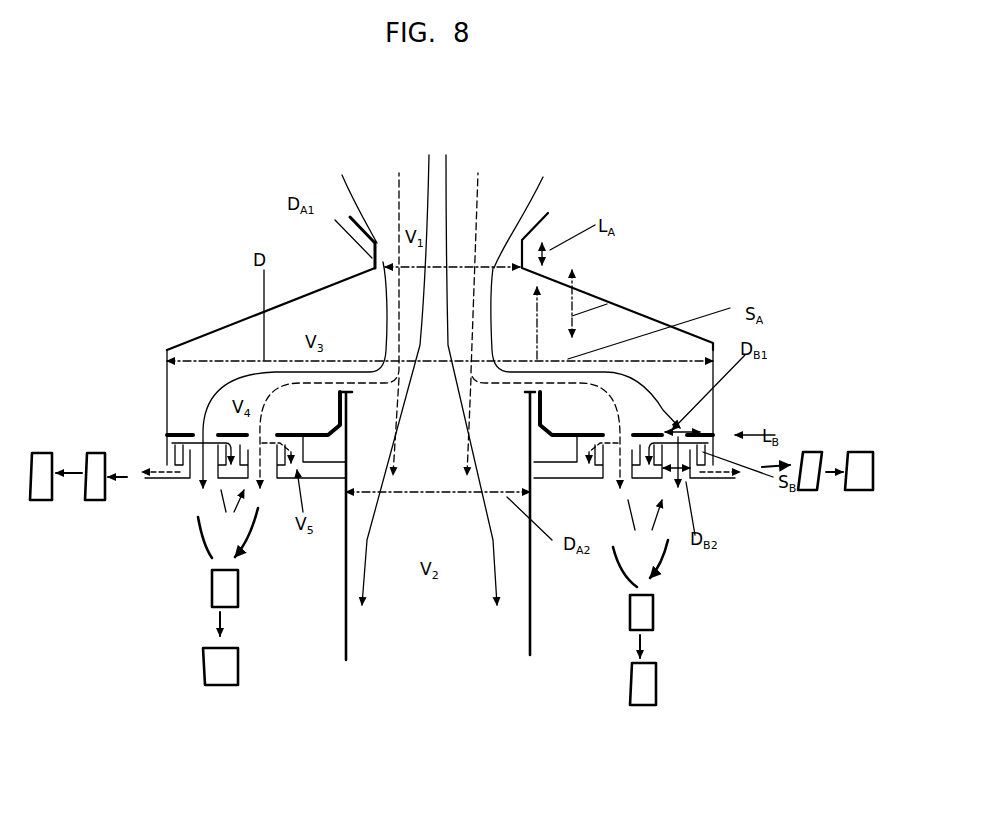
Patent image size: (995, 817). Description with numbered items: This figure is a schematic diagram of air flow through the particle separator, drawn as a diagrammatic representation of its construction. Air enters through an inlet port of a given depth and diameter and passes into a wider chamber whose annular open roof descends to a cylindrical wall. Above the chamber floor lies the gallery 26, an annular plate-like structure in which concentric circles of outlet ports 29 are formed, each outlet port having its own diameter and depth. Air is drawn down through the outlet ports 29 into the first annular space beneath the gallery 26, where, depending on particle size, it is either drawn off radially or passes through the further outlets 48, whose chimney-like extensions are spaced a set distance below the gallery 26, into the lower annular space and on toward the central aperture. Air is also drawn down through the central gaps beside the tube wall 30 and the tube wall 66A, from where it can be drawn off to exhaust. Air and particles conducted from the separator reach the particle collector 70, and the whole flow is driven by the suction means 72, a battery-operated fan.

The gallery 26 is at (705, 428).
The outlet ports 29 is at (192, 428).
The inner tube wall 30 is at (347, 647).
The tube wall 66A is at (505, 652).
The further outlets 48 is at (433, 547).
The particle collector 70 is at (454, 541).
The suction means 72 is at (451, 578).